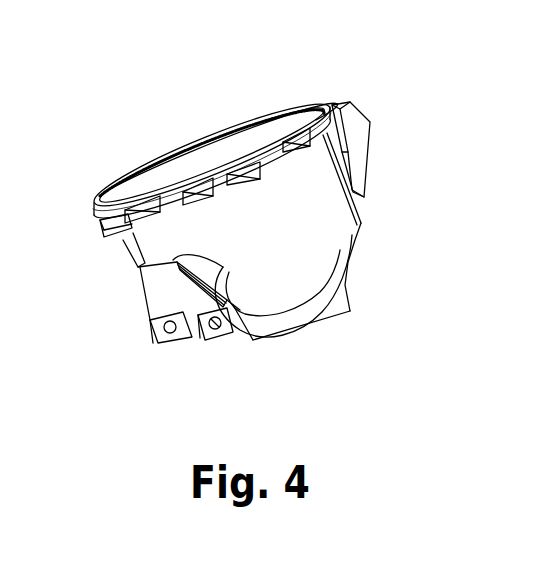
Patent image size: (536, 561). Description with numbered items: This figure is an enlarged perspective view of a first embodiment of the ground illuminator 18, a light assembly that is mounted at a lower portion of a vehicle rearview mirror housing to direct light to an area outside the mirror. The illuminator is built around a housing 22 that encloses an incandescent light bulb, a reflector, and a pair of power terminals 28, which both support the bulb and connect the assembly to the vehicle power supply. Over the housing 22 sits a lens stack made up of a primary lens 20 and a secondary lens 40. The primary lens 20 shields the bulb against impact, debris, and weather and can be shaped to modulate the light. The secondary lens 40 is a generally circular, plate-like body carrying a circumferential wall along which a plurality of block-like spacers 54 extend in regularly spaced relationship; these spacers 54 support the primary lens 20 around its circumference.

The ground illuminator 18 is at (157, 116).
The primary lens 20 is at (220, 148).
The housing 22 is at (297, 248).
The power terminals 28 is at (210, 337).
The secondary lens 40 is at (127, 221).
The spacers 54 is at (270, 158).